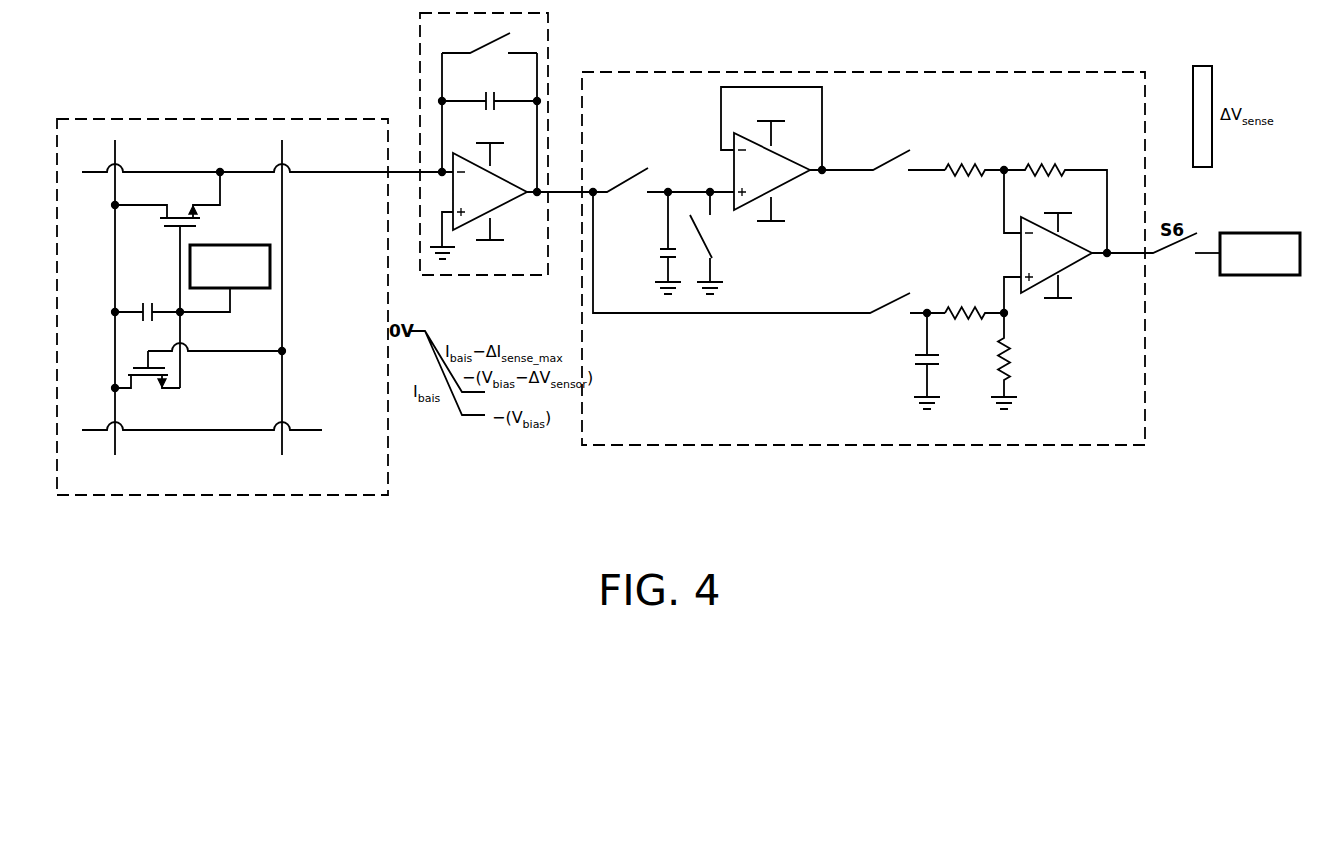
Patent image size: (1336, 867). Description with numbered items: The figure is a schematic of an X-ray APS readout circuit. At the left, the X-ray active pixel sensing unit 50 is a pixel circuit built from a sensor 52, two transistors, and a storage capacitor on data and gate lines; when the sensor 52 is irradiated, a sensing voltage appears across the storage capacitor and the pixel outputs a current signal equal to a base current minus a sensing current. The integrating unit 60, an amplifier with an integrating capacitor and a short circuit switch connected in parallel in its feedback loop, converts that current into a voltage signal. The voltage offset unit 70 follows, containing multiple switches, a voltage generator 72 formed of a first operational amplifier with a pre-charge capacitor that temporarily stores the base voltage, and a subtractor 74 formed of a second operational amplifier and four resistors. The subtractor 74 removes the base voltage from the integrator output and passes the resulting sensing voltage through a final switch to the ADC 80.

The X-ray active pixel sensing unit 50 is at (235, 118).
The sensor 52 is at (235, 245).
The integrating unit 60 is at (484, 276).
The voltage offset unit 70 is at (892, 70).
The voltage generator 72 is at (722, 170).
The subtractor 74 is at (1008, 253).
The ADC 80 is at (1265, 233).